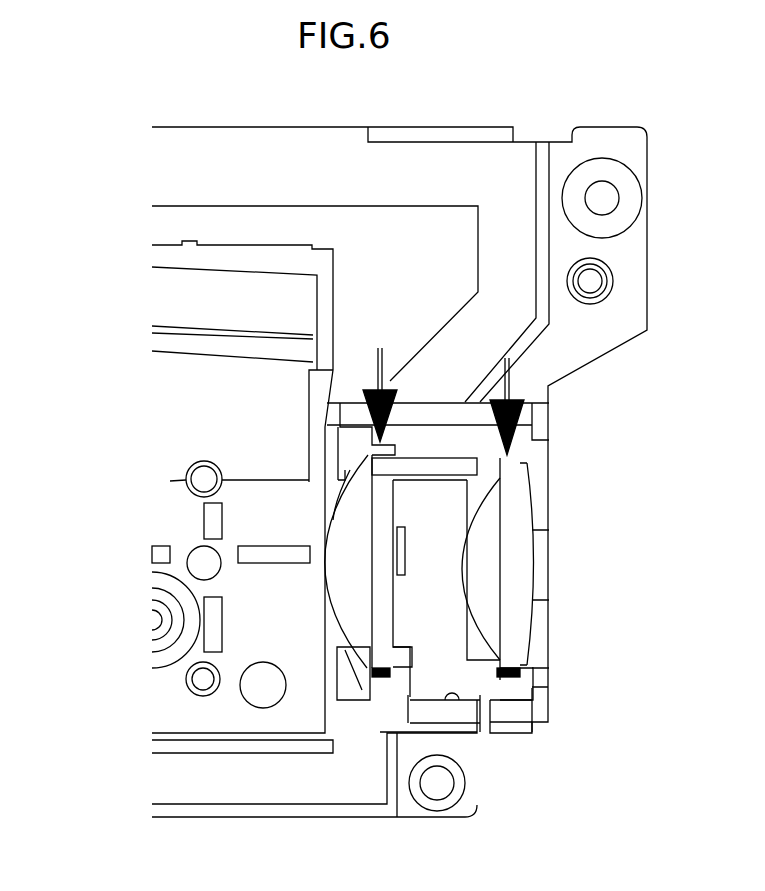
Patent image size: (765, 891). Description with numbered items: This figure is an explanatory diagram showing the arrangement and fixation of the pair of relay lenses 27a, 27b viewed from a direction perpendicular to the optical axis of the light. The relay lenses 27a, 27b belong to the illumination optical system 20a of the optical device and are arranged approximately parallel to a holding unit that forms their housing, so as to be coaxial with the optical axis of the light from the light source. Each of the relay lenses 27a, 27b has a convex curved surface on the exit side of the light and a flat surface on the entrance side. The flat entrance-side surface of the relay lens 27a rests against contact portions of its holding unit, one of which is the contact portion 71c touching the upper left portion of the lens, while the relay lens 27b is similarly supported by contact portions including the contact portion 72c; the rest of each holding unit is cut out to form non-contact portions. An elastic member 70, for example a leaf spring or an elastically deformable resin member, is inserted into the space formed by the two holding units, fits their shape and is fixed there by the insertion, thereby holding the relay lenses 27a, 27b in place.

The illumination optical system 20a is at (130, 127).
The elastic member 70 is at (477, 470).
The relay lens 27a is at (513, 512).
The relay lens 27b is at (383, 602).
The contact portion 71c is at (521, 672).
The contact portion 72c is at (378, 680).